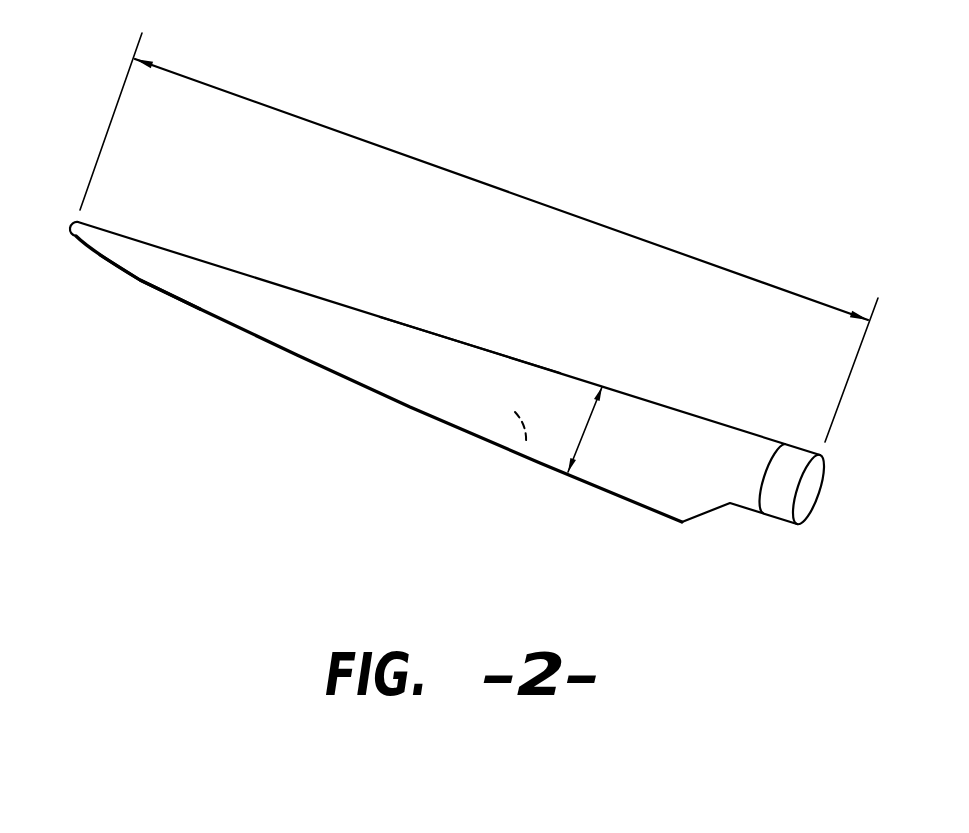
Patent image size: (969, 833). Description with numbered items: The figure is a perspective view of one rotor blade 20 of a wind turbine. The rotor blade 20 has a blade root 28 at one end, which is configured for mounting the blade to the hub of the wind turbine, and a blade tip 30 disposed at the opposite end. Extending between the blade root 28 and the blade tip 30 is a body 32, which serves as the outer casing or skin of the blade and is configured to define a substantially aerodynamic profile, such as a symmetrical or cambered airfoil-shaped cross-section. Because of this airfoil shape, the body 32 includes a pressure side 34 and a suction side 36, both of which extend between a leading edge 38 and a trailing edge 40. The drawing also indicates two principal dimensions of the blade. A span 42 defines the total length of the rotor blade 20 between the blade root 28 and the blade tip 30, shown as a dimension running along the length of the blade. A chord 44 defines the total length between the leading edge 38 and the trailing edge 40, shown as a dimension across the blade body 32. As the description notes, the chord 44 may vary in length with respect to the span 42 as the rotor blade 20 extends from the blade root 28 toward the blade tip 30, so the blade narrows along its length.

The rotor blade 20 is at (455, 314).
The blade root 28 is at (767, 524).
The blade tip 30 is at (76, 224).
The body 32 is at (433, 345).
The pressure side 34 is at (525, 453).
The suction side 36 is at (323, 345).
The leading edge 38 is at (218, 262).
The trailing edge 40 is at (183, 305).
The span 42 is at (483, 182).
The chord 44 is at (590, 427).